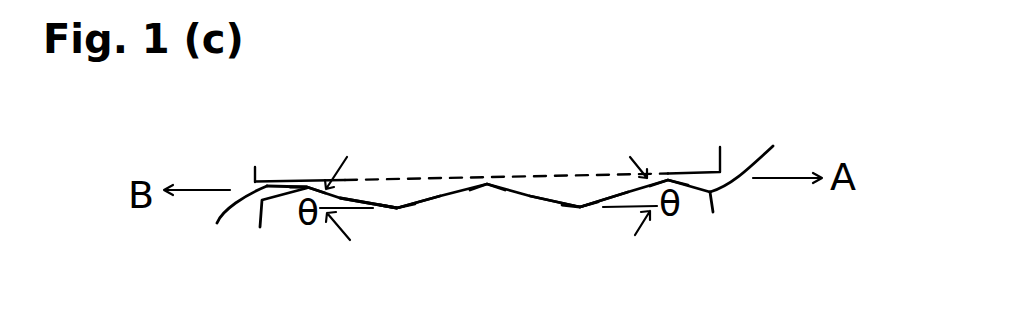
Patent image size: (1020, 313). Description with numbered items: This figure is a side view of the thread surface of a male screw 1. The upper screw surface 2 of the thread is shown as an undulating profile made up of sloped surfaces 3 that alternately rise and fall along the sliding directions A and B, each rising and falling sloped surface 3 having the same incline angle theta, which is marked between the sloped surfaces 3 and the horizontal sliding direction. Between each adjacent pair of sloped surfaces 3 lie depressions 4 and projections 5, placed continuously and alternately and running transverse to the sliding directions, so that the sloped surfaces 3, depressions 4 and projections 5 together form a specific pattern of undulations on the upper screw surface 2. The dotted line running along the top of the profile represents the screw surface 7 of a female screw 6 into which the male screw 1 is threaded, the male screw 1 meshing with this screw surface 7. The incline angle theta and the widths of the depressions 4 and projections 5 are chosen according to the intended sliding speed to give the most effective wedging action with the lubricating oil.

The male screw 1 is at (488, 220).
The upper screw surface 2 is at (749, 150).
The sloped surfaces 3 is at (353, 196).
The depressions 4 is at (402, 204).
The projections 5 is at (303, 182).
The female screw 6 is at (263, 167).
The screw surface 7 is at (228, 229).